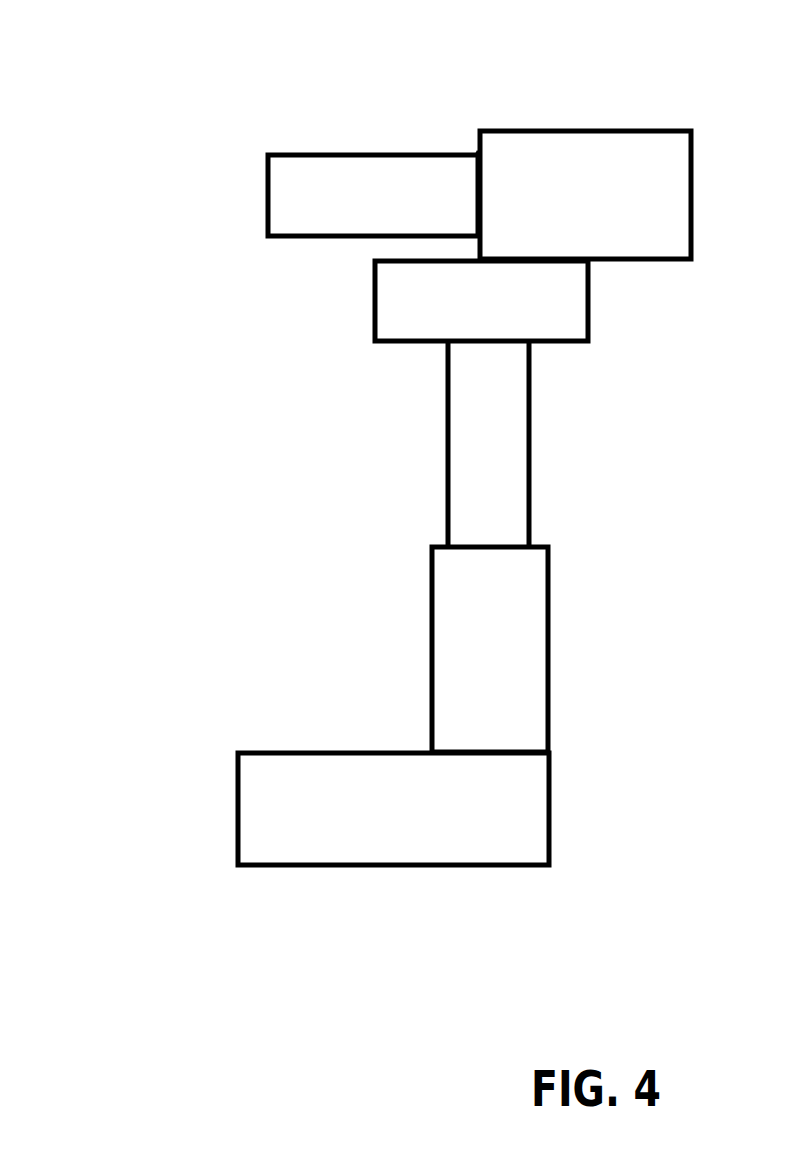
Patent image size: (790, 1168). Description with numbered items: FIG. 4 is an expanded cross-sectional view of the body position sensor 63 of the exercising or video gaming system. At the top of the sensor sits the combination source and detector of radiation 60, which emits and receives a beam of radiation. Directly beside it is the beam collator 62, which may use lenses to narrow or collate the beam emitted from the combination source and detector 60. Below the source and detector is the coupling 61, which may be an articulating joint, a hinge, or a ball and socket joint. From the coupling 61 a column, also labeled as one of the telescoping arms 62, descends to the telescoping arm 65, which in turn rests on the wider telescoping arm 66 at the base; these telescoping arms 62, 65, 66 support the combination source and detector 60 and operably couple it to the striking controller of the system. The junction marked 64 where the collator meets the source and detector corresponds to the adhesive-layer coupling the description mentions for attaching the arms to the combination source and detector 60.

The combination source and detector of radiation 60 is at (548, 217).
The coupling 61 is at (451, 321).
The beam collator 62 is at (337, 217).
The body position sensor 63 is at (247, 119).
The junction 64 is at (476, 152).
The telescoping arm 65 is at (462, 660).
The telescoping arm 66 is at (349, 838).